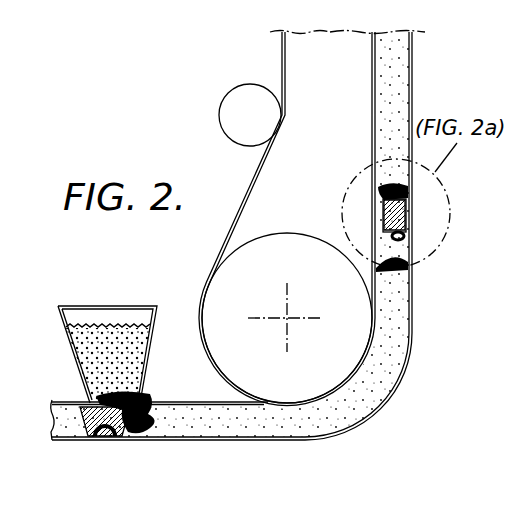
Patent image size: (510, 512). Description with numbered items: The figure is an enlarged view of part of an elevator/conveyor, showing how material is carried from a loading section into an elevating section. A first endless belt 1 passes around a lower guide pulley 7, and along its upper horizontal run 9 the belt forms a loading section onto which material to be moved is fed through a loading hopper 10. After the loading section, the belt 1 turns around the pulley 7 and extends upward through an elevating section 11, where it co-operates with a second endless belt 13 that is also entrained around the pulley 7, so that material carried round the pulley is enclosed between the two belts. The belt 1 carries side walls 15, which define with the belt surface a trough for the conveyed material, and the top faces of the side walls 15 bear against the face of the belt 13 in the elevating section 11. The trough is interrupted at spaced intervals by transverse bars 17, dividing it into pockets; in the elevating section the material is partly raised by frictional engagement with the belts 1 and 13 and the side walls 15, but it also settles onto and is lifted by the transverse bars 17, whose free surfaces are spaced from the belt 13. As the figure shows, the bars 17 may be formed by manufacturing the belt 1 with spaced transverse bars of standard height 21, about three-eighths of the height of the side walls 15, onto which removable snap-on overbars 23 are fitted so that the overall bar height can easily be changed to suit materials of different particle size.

The first endless belt 1 is at (212, 440).
The lower guide pulley 7 is at (265, 305).
The upper horizontal run 9 is at (186, 400).
The loading hopper 10 is at (113, 308).
The elevating section 11 is at (370, 52).
The second endless belt 13 is at (257, 173).
The side walls 15 is at (65, 403).
The transverse bars 17 is at (108, 438).
The transverse bars of standard height 21 is at (406, 215).
The snap-on overbars 23 is at (404, 236).